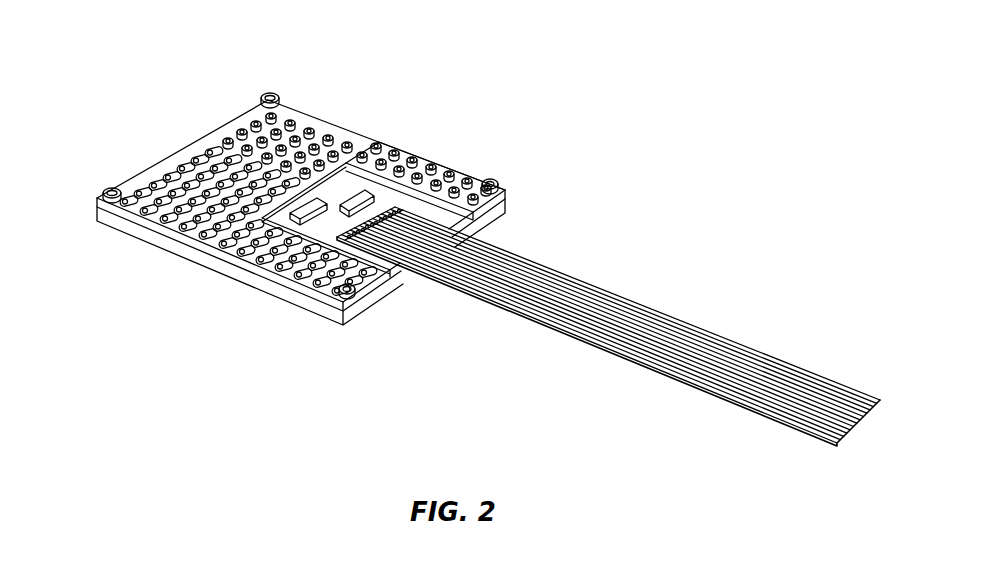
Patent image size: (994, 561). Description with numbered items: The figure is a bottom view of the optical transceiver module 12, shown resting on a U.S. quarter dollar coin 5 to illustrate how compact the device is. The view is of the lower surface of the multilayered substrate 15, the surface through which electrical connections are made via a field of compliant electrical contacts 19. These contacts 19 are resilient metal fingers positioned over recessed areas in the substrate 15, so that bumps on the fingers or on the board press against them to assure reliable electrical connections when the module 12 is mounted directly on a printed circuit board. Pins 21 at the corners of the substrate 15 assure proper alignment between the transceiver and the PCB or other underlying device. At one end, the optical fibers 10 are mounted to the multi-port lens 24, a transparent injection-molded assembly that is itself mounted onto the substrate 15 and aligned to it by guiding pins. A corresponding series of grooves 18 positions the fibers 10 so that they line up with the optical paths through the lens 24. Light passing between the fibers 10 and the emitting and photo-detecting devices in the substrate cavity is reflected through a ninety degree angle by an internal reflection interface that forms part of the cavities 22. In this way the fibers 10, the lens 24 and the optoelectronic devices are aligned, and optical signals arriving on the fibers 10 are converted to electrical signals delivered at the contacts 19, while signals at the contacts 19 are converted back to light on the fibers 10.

The module 12 is at (354, 64).
The U.S. quarter dollar coin 5 is at (497, 212).
The optical fibers 10 is at (723, 337).
The substrate 15 is at (350, 294).
The grooves 18 is at (400, 228).
The electrical contacts 19 is at (297, 258).
The pins 21 is at (110, 188).
The cavities 22 is at (298, 207).
The multi-port lens 24 is at (338, 182).